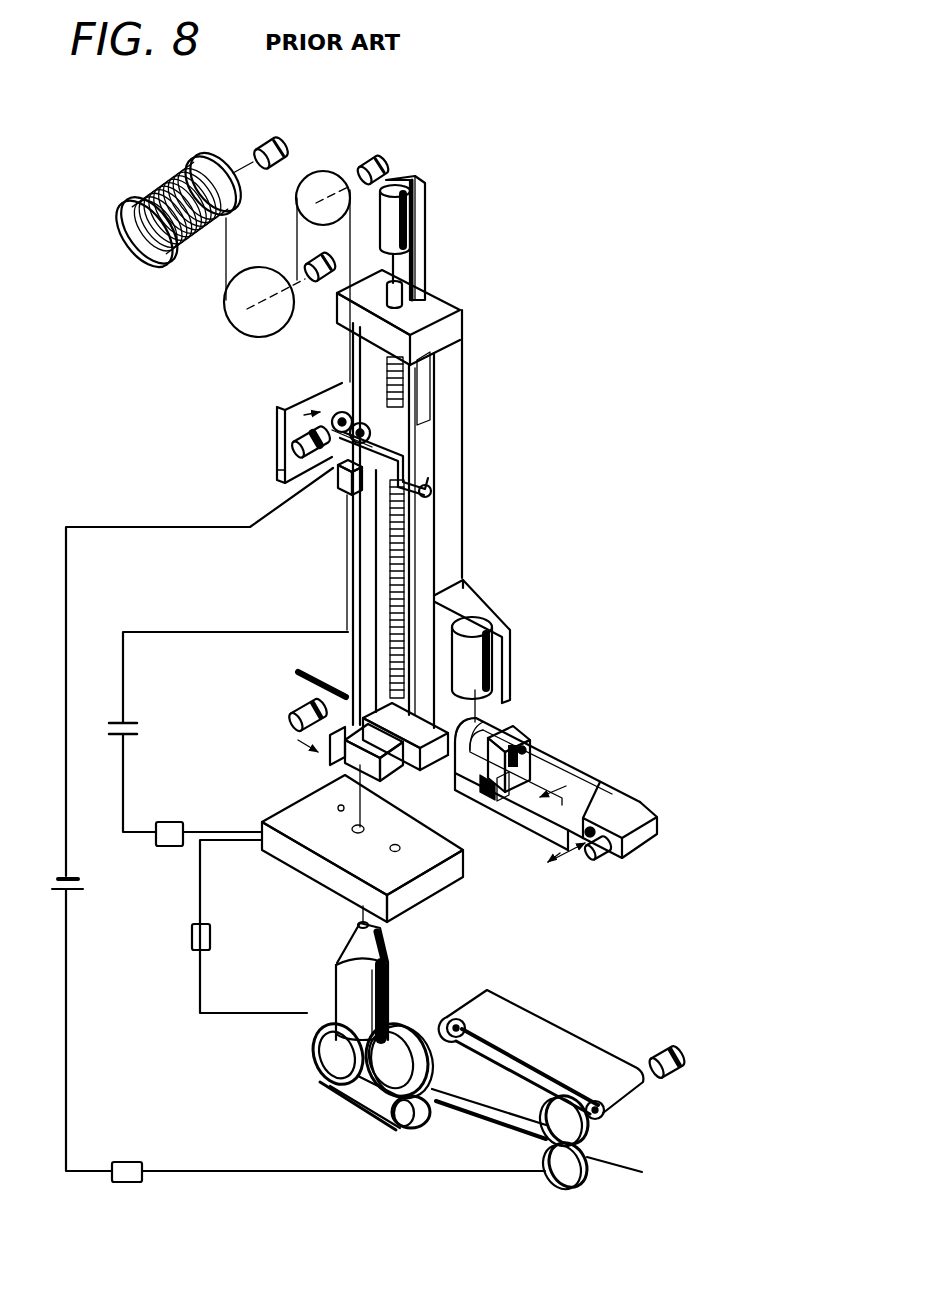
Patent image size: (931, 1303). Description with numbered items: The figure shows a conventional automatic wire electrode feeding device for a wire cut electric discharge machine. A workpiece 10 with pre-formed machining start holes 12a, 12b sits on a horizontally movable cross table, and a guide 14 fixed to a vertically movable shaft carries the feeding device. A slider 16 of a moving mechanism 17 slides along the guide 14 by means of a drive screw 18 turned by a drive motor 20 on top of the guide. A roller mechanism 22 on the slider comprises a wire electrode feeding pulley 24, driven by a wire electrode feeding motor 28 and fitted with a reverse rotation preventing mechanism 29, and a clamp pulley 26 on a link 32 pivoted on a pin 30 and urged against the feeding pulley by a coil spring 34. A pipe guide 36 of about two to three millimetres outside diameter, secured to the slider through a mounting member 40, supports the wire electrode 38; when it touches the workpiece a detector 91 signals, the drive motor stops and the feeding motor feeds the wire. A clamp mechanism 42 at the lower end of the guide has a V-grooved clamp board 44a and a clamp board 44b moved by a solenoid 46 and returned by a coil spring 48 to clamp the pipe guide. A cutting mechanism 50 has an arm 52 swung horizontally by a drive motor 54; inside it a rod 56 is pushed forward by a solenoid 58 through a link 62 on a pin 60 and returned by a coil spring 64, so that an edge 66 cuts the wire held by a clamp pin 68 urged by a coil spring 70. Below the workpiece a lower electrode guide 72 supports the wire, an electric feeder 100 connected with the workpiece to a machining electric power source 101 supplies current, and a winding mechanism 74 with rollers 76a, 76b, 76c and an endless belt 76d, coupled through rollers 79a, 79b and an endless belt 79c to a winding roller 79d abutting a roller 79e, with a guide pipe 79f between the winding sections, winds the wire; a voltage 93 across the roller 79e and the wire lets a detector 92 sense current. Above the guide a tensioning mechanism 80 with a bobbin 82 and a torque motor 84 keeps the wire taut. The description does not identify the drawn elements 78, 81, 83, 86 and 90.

The workpiece 10 is at (345, 843).
The machining start hole 12a is at (355, 827).
The machining start hole 12b is at (388, 849).
The guide 14 is at (458, 338).
The slider 16 is at (292, 402).
The moving mechanism 17 is at (436, 458).
The drive screw 18 is at (405, 392).
The drive motor 20 is at (420, 182).
The roller mechanism 22 is at (285, 433).
The wire electrode feeding pulley 24 is at (340, 420).
The clamp pulley 26 is at (348, 398).
The wire electrode feeding motor 28 is at (280, 467).
The reverse rotation preventing mechanism 29 is at (288, 449).
The pin 30 is at (349, 505).
The link 32 is at (432, 445).
The coil spring 34 is at (436, 502).
The pipe guide 36 is at (352, 579).
The wire electrode 38 is at (364, 830).
The mounting member 40 is at (342, 486).
The clamp mechanism 42 is at (338, 778).
The clamp board 44a is at (385, 758).
The clamp board 44b is at (344, 758).
The solenoid 46 is at (300, 706).
The coil spring 48 is at (328, 690).
The cutting mechanism 50 is at (617, 756).
The arm 52 is at (488, 724).
The drive motor 54 is at (470, 612).
The rod 56 is at (548, 808).
The solenoid 58 is at (508, 730).
The pin 60 is at (488, 792).
The link 62 is at (528, 748).
The coil spring 64 is at (505, 800).
The edge 66 is at (603, 812).
The clamp pin 68 is at (600, 858).
The coil spring 70 is at (558, 860).
The lower electrode guide 72 is at (356, 948).
The winding mechanism 74 is at (525, 1002).
The roller 76a is at (318, 1050).
The roller 76b is at (426, 1068).
The roller 76c is at (396, 1124).
The endless belt 76d is at (352, 1100).
The motor 78 is at (668, 1046).
The roller 79a is at (445, 1018).
The roller 79b is at (608, 1115).
The endless belt 79c is at (556, 1036).
The winding roller 79d is at (590, 1142).
The roller 79e is at (585, 1180).
The guide pipe 79f is at (478, 1125).
The tensioning mechanism 80 is at (283, 180).
The pulley 81 is at (240, 312).
The bobbin 82 is at (152, 247).
The motor 83 is at (325, 283).
The torque motor 84 is at (271, 139).
The motor 86 is at (380, 150).
The capacitor 90 is at (140, 730).
The detector 91 is at (170, 822).
The detector 92 is at (138, 1165).
The voltage 93 is at (58, 882).
The electric feeder 100 is at (345, 975).
The machining electric power source 101 is at (192, 936).